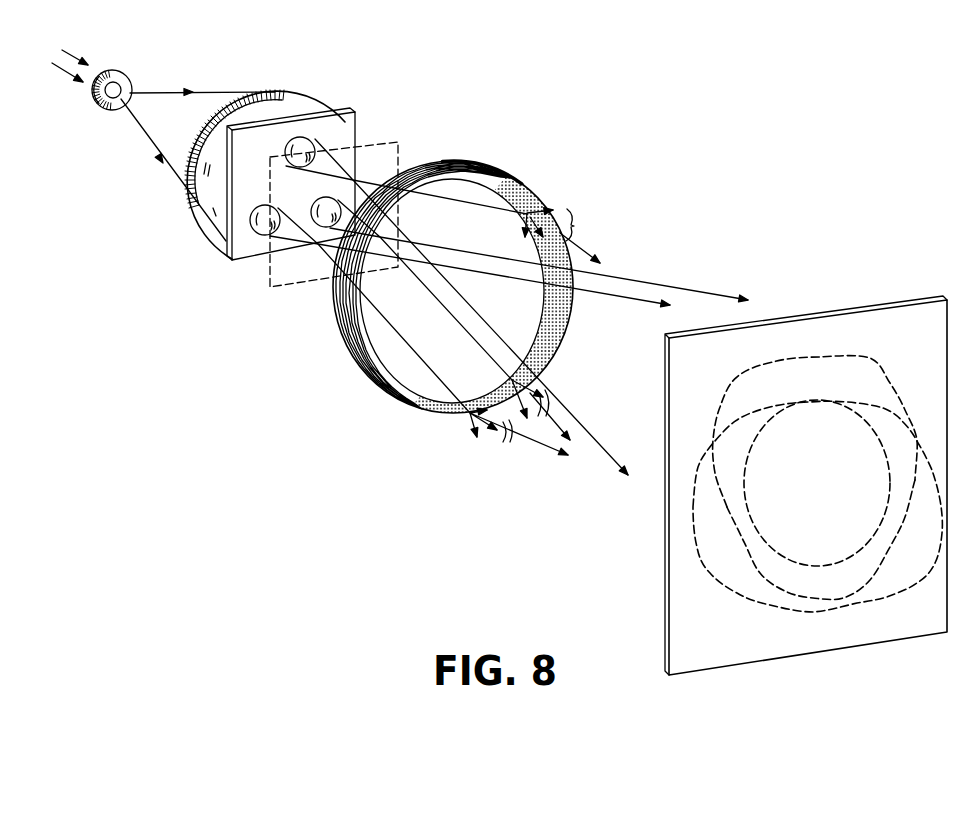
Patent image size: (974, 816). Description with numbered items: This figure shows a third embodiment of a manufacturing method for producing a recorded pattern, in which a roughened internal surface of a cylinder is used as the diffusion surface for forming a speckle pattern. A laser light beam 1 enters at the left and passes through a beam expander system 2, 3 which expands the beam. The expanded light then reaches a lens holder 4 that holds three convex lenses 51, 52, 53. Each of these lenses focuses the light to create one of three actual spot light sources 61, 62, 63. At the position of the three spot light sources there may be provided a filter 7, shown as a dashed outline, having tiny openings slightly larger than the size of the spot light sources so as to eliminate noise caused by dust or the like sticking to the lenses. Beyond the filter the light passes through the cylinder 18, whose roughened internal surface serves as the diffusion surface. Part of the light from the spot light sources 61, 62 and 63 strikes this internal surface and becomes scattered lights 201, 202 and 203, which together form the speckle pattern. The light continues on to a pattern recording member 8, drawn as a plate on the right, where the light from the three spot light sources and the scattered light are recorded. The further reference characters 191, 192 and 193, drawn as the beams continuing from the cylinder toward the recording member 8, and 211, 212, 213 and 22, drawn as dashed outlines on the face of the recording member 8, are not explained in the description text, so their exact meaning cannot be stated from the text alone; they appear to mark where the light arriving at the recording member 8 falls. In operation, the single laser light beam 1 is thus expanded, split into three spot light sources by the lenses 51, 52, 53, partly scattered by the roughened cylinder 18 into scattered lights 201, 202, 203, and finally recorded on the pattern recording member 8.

The laser light beam 1 is at (75, 36).
The beam expander system 2 is at (118, 72).
The beam expander system 3 is at (295, 94).
The lens holder 4 is at (331, 111).
The lens 51 is at (254, 238).
The lens 52 is at (286, 144).
The lens 53 is at (310, 205).
The actual spot light source 61 is at (316, 246).
The actual spot light source 62 is at (354, 178).
The actual spot light source 63 is at (395, 233).
The filter 7 is at (400, 142).
The cylinder 18 is at (469, 170).
The first output beam 191 is at (609, 299).
The second output beam 192 is at (609, 458).
The third output beam 193 is at (653, 282).
The scattered light 201 is at (512, 442).
The scattered light 202 is at (568, 235).
The scattered light 203 is at (553, 406).
The pattern recording member 8 is at (850, 312).
The first light spot 211 is at (773, 363).
The second light spot 212 is at (704, 573).
The third light spot 213 is at (725, 503).
The central light spot 22 is at (847, 444).